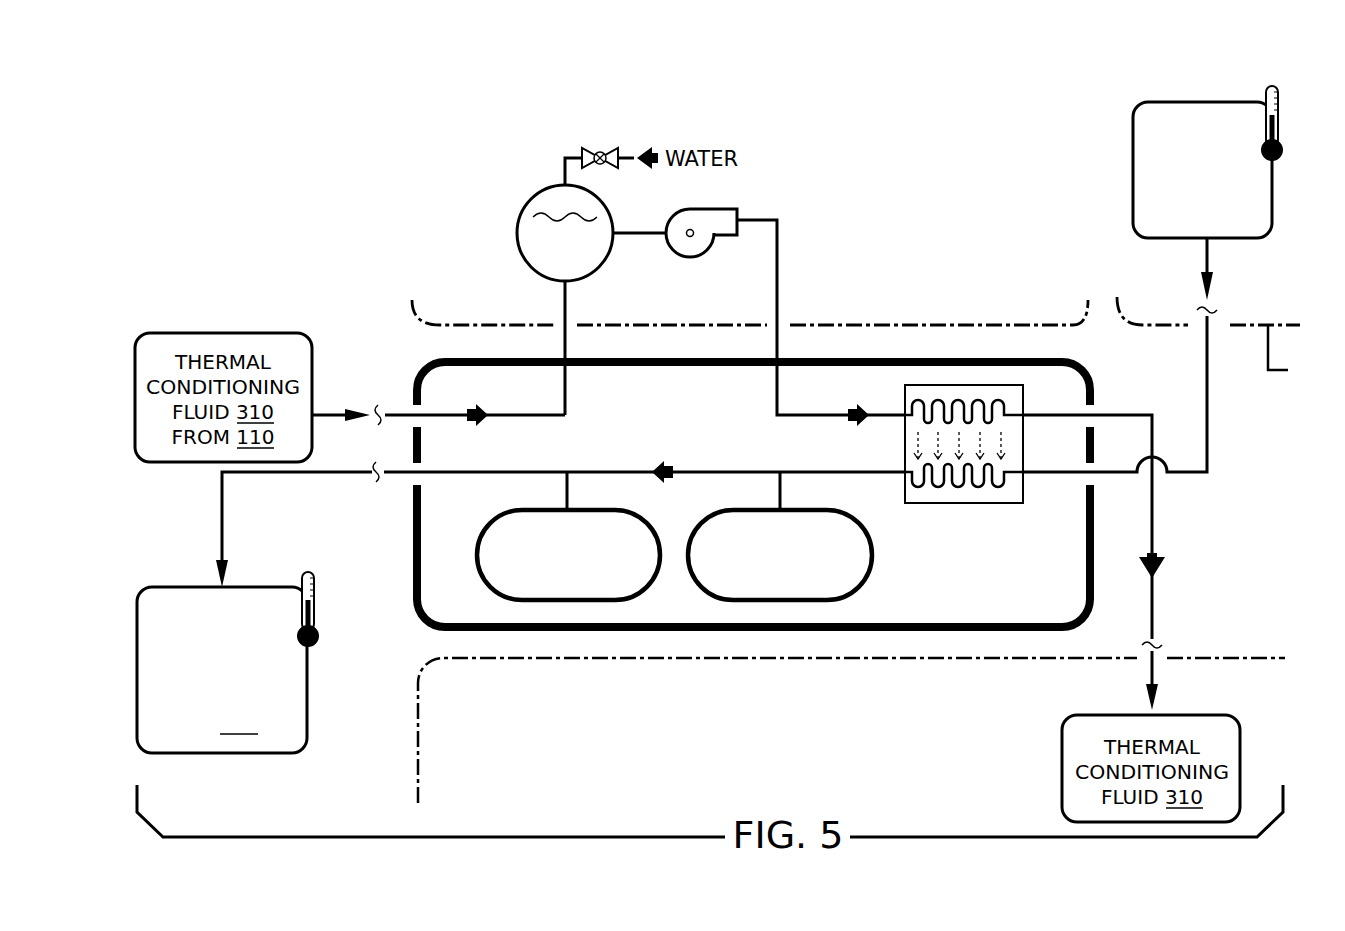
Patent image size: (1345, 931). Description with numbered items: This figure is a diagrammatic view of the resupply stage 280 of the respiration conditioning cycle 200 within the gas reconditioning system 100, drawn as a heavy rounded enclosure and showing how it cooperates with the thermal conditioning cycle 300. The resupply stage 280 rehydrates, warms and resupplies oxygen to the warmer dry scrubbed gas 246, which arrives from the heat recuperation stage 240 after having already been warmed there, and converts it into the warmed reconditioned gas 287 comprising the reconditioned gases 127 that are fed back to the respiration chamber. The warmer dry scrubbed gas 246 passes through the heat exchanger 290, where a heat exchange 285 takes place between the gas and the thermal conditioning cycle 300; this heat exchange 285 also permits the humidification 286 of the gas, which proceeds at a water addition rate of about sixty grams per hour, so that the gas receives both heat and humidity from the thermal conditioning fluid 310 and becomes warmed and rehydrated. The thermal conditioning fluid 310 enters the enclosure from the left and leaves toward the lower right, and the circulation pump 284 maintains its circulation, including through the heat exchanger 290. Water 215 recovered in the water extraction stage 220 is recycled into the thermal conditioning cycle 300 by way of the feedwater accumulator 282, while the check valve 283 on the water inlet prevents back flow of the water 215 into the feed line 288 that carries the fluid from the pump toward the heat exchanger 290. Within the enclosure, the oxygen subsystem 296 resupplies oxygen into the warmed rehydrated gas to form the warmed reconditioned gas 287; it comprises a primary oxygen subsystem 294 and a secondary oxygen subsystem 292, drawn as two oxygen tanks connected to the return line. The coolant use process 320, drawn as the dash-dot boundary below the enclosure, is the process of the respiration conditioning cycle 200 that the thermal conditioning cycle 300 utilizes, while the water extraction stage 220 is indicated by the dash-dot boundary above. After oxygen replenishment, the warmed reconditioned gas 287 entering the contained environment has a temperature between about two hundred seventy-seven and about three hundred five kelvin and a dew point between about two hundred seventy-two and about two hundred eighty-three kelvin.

The gas reconditioning system 100 is at (551, 685).
The respiration conditioning cycle 200 is at (679, 685).
The thermal conditioning cycle 300 is at (856, 687).
The reconditioned gases 127 is at (307, 728).
The water 215 is at (545, 219).
The water extraction stage 220 is at (413, 323).
The heat recuperation stage 240 is at (1302, 354).
The warmer dry scrubbed gas 246 is at (1243, 238).
The resupply stage 280 is at (412, 540).
The feedwater accumulator 282 is at (528, 203).
The check valve 283 is at (592, 150).
The circulation pump 284 is at (693, 257).
The heat exchange 285 is at (917, 446).
The humidification 286 is at (1005, 446).
The warmed reconditioned gas 287 is at (307, 683).
The feed line 288 is at (779, 268).
The heat exchanger 290 is at (1005, 503).
The secondary oxygen subsystem 292 is at (773, 511).
The primary oxygen subsystem 294 is at (520, 511).
The oxygen subsystem 296 is at (890, 578).
The thermal conditioning fluid 310 is at (552, 250).
The coolant use process 320 is at (418, 787).